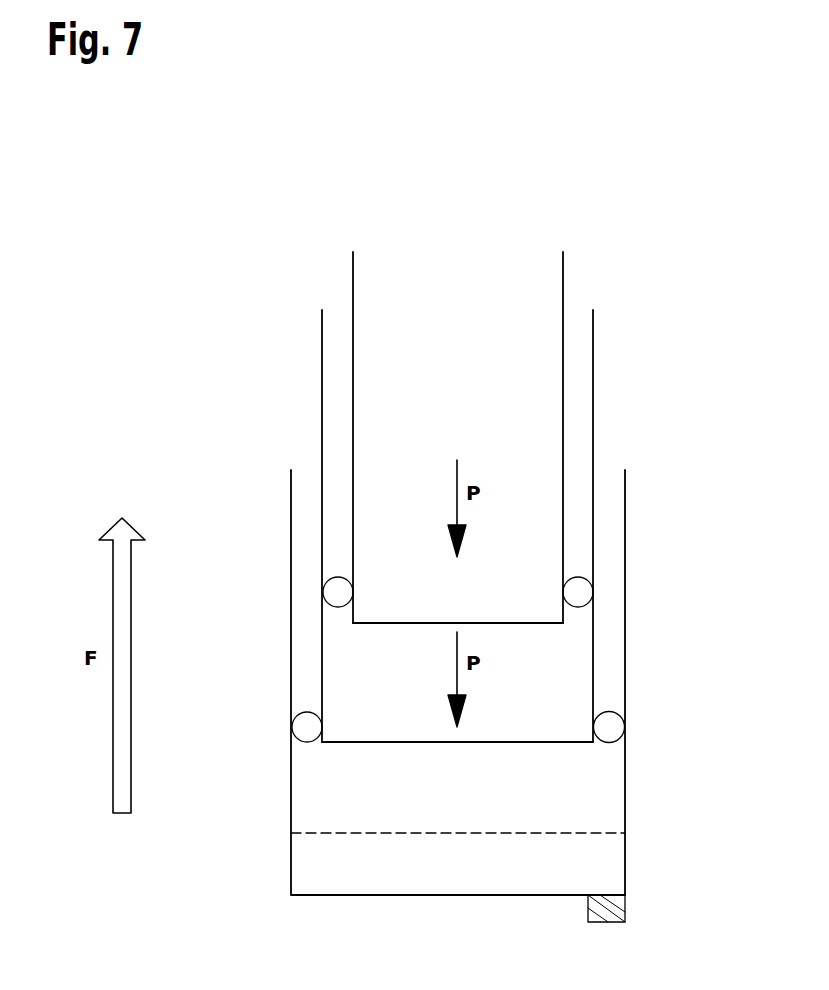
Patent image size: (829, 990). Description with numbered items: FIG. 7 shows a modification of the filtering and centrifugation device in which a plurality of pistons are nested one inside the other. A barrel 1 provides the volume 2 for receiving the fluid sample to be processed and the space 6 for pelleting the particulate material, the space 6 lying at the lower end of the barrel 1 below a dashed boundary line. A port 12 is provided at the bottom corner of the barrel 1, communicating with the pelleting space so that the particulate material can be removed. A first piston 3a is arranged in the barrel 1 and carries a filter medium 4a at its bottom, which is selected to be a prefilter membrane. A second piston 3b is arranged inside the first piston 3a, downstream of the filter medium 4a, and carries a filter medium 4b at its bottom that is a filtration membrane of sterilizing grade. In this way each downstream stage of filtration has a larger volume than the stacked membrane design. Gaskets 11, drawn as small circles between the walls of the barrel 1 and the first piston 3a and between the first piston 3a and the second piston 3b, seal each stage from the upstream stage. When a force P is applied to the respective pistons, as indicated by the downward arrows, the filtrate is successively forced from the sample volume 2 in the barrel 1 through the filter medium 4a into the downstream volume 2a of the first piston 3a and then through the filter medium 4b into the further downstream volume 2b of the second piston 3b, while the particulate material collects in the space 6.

The barrel 1 is at (291, 853).
The volume 2 is at (342, 787).
The downstream volume 2a is at (520, 549).
The downstream volume 2b is at (536, 457).
The first piston 3a is at (593, 555).
The second piston 3b is at (563, 392).
The filter medium 4a is at (560, 742).
The filter medium 4b is at (525, 623).
The space for pelleting particulate material 6 is at (585, 857).
The gaskets 11 is at (323, 588).
The port 12 is at (625, 908).